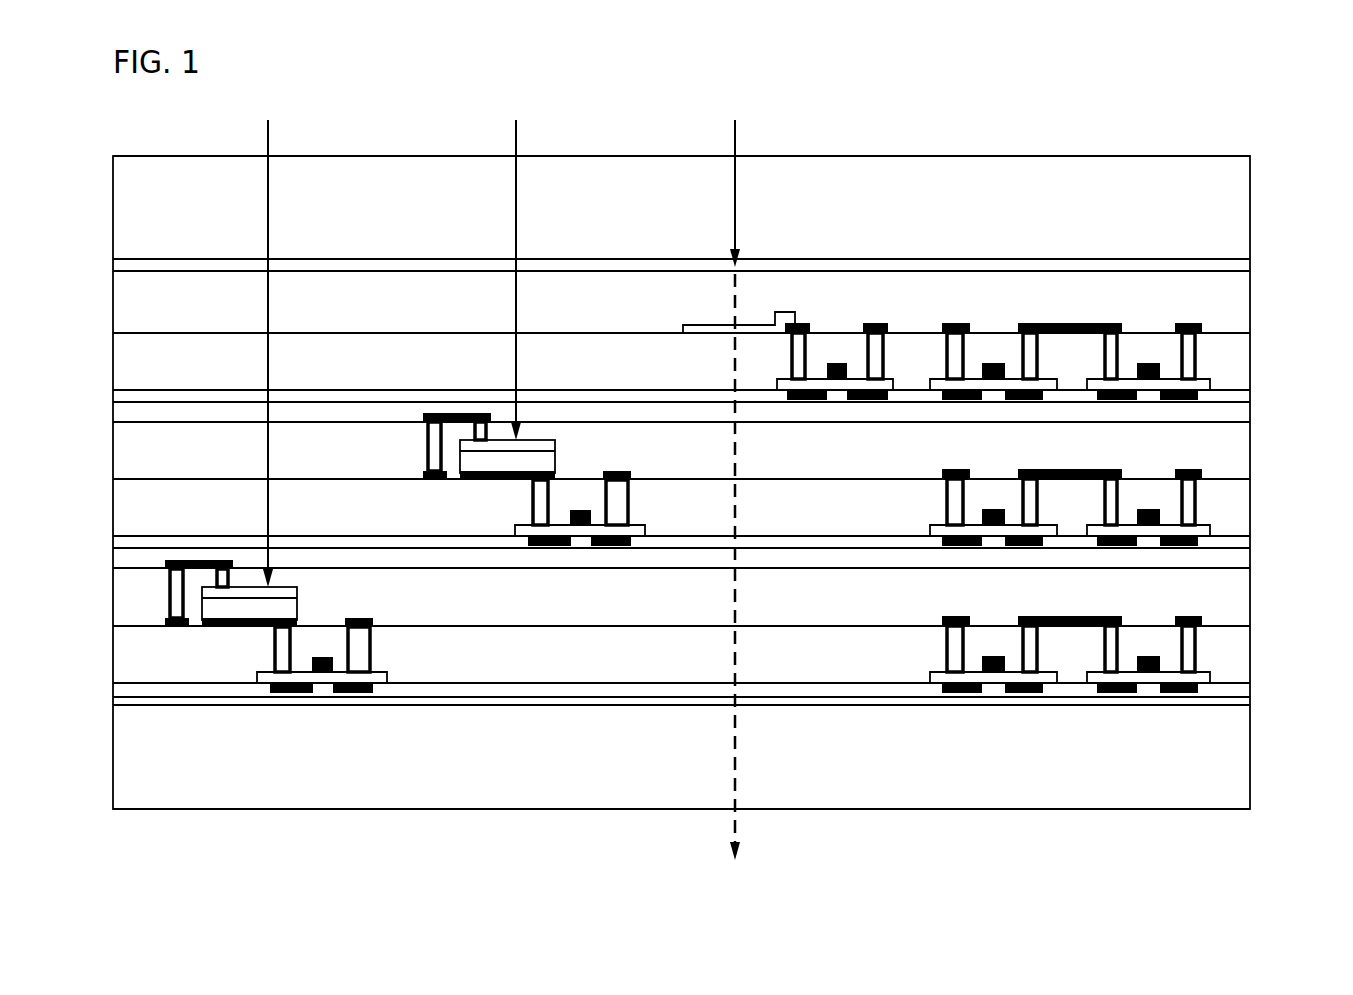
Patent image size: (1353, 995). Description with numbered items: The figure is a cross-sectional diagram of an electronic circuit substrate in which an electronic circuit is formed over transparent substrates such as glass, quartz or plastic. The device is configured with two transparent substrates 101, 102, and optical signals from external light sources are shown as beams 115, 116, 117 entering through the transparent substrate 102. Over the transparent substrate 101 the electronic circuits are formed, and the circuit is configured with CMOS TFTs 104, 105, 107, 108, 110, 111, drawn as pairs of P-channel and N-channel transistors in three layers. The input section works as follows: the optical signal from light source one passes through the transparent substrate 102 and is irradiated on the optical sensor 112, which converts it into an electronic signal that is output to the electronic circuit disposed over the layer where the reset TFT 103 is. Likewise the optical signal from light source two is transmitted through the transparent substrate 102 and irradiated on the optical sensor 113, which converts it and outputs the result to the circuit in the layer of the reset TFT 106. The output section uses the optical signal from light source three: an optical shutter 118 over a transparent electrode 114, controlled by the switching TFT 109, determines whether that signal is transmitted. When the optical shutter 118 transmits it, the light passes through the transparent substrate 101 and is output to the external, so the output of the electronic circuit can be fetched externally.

The transparent substrate 101 is at (1232, 777).
The transparent substrate 102 is at (1232, 229).
The reset TFT 103 is at (281, 652).
The TFT 104 is at (1026, 679).
The TFT 105 is at (1151, 679).
The reset TFT 106 is at (541, 507).
The TFT 107 is at (1026, 535).
The TFT 108 is at (1150, 535).
The switching TFT 109 is at (837, 391).
The TFT 110 is at (1026, 391).
The TFT 111 is at (1151, 390).
The optical sensor 112 is at (298, 598).
The optical sensor 113 is at (557, 456).
The transparent electrode 114 is at (695, 326).
The beam 115 is at (262, 216).
The beam 116 is at (512, 216).
The beam 117 is at (733, 213).
The optical shutter 118 is at (1235, 316).